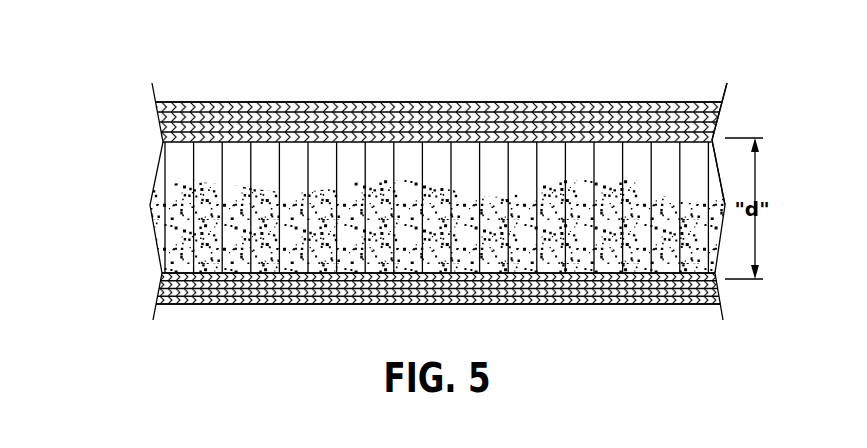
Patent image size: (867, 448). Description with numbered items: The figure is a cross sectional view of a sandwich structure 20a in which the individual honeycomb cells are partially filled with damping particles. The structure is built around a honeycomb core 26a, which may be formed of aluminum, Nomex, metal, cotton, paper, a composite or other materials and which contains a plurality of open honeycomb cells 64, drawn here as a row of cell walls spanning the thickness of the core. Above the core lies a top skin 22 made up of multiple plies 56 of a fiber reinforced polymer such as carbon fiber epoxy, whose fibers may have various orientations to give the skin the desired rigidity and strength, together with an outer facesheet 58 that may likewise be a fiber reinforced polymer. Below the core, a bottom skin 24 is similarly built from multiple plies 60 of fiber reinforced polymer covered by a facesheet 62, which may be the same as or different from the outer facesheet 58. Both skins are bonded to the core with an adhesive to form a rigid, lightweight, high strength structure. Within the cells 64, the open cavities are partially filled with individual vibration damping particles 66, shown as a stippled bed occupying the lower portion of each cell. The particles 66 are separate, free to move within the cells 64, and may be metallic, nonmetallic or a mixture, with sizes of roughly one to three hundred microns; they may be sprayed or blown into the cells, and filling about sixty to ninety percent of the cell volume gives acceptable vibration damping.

The sandwich structure 20a is at (124, 72).
The top skin 22 is at (117, 100).
The bottom skin 24 is at (117, 275).
The honeycomb core 26a is at (395, 165).
The plies 56 is at (705, 137).
The outer facesheet 58 is at (332, 108).
The plies 60 is at (243, 281).
The facesheet 62 is at (578, 300).
The honeycomb cells 64 is at (601, 146).
The vibration damping particles 66 is at (437, 207).